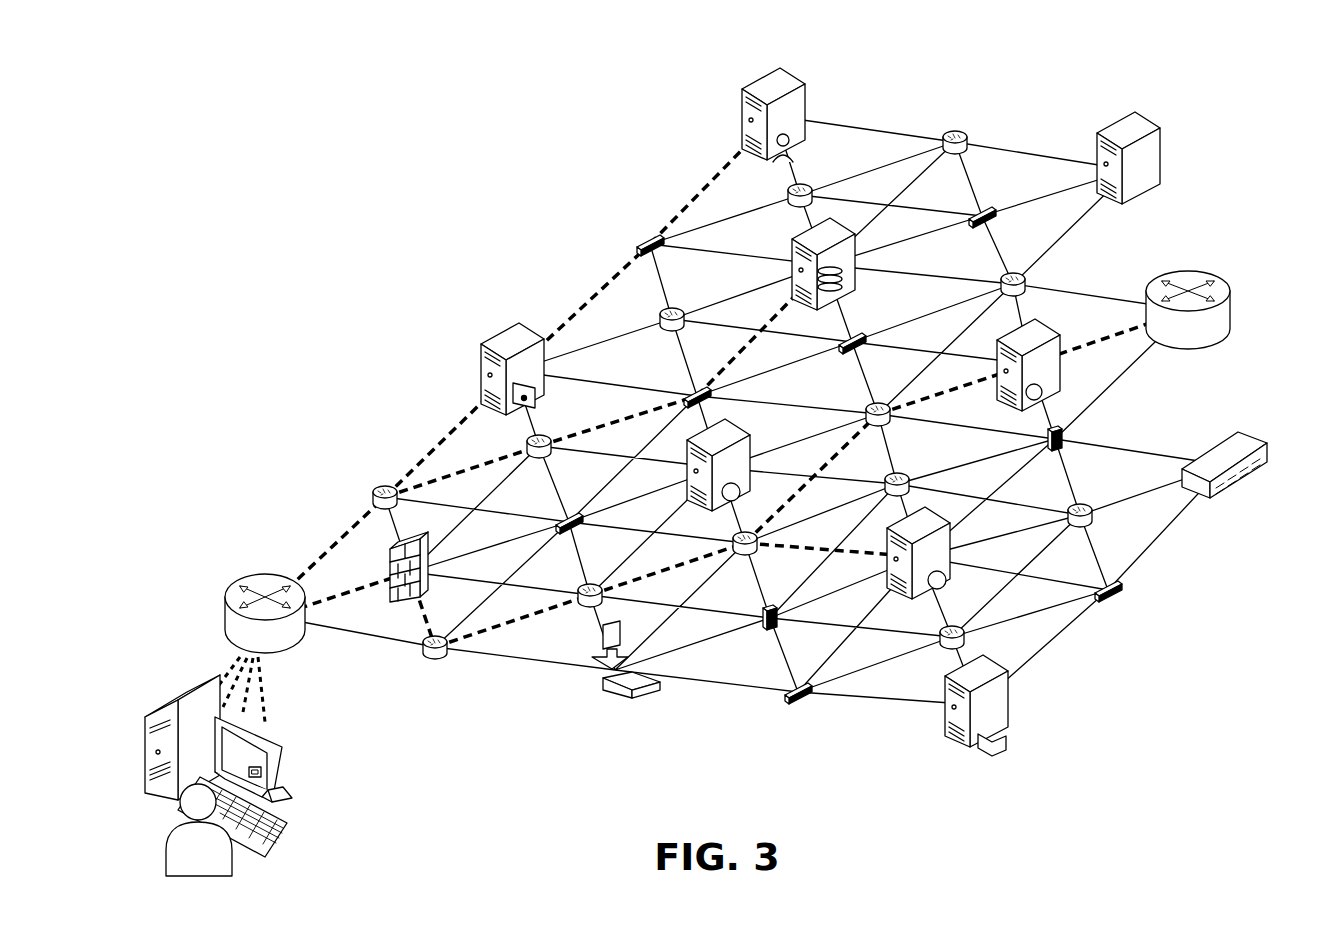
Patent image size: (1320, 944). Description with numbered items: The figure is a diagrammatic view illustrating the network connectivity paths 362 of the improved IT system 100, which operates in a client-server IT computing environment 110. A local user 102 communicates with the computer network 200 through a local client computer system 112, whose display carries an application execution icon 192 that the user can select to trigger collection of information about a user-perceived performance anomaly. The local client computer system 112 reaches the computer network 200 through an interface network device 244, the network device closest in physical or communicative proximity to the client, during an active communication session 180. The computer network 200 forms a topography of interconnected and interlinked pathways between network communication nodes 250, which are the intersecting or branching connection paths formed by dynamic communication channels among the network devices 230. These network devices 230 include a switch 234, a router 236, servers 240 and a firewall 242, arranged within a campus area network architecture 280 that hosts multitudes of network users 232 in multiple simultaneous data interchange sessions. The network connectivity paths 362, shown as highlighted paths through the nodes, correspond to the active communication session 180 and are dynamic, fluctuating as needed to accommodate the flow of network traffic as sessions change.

The improved IT system 100 is at (312, 157).
The client-server IT computing environment 110 is at (437, 160).
The computer network 200 is at (437, 226).
The campus area network architecture 280 is at (1246, 228).
The network devices 230 is at (1102, 683).
The network connectivity paths 362 is at (322, 527).
The interface network device 244 is at (220, 558).
The firewall 242 is at (426, 556).
The router 236 is at (1229, 332).
The switch 234 is at (1212, 435).
The server 240 is at (1017, 735).
The network communication nodes 250 is at (804, 706).
The local client computer system 112 is at (162, 712).
The active communication session 180 is at (292, 713).
The application execution icon 192 is at (270, 778).
The local user 102 is at (170, 826).
The network users 232 is at (238, 862).